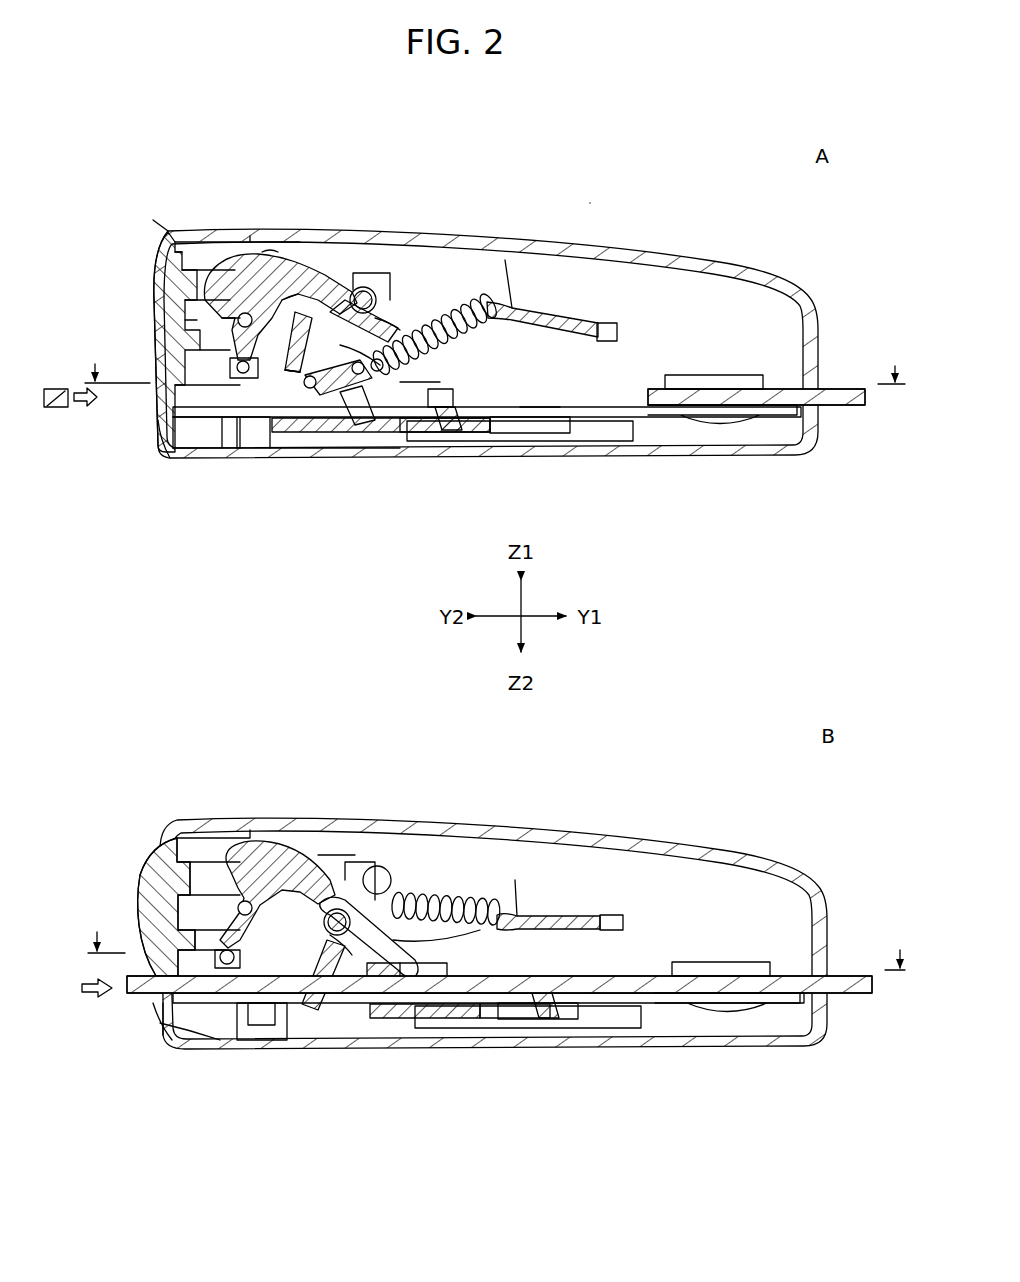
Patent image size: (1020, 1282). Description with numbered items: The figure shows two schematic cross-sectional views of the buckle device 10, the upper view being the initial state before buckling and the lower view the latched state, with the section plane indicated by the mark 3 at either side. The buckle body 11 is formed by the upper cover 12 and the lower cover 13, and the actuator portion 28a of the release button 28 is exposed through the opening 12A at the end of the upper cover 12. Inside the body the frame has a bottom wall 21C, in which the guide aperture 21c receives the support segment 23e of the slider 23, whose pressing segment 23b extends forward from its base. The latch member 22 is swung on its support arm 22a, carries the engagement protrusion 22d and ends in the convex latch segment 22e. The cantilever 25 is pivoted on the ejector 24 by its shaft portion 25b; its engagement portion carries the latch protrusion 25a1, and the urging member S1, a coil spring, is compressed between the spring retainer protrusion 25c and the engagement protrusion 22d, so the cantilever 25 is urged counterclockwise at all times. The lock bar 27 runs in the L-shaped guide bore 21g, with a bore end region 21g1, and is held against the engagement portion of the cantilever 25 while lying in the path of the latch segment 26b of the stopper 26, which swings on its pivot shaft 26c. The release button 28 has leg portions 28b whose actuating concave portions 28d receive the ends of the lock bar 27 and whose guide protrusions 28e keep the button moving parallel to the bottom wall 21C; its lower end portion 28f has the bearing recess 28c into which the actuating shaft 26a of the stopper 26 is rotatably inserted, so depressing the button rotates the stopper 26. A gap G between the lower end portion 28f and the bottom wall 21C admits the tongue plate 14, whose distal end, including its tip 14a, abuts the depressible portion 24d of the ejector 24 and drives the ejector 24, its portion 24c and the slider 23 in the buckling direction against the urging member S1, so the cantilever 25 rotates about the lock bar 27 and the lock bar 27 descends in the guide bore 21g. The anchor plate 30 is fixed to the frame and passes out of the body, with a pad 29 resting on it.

The buckle device 10 is at (592, 202).
The buckle body 11 is at (152, 218).
The upper cover 12 is at (395, 286).
The opening 12A is at (168, 430).
The lower cover 13 is at (514, 450).
The tongue plate 14 is at (58, 408).
The detector portion 14a is at (260, 1012).
The bottom wall 21C is at (660, 418).
The guide aperture 21c is at (545, 407).
The guide bore 21g is at (362, 275).
The support wall portion 21g1 is at (420, 384).
The latch member 22 is at (542, 323).
The support arm 22a is at (608, 323).
The engagement protrusion 22d is at (510, 300).
The latch segment 22e is at (285, 300).
The slider 23 is at (312, 433).
The pressing segment 23b is at (452, 433).
The support segment 23e is at (456, 395).
The ejector 24 is at (372, 398).
The lever arm 24c is at (377, 433).
The depressible portion 24d is at (280, 430).
The cantilever 25 is at (398, 282).
The latch protrusion 25a1 is at (392, 310).
The shaft portion 25b is at (322, 420).
The spring retainer protrusion 25c is at (382, 372).
The stopper 26 is at (265, 249).
The actuating shaft 26a is at (247, 413).
The latch segment 26b is at (338, 288).
The pivot shaft 26c is at (212, 280).
The lock bar 27 is at (352, 290).
The release button 28 is at (148, 292).
The actuator portion 28a is at (168, 262).
The leg portion 28b is at (345, 300).
The bearing recess 28c is at (205, 420).
The actuating concave portion 28d is at (330, 855).
The guide protrusion 28e is at (178, 320).
The lower end portion 28f is at (172, 455).
The pad 29 is at (714, 374).
The anchor plate 30 is at (850, 407).
The section line 3 is at (495, 654).
The urging member S1 is at (455, 312).
The gap G is at (150, 390).